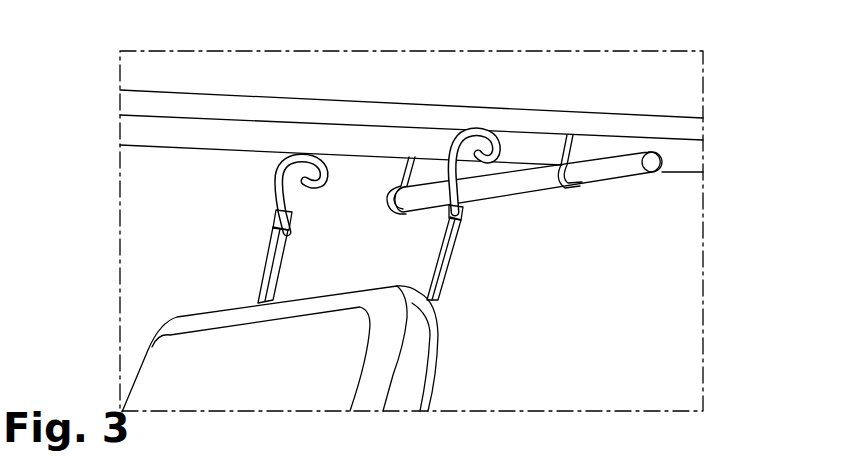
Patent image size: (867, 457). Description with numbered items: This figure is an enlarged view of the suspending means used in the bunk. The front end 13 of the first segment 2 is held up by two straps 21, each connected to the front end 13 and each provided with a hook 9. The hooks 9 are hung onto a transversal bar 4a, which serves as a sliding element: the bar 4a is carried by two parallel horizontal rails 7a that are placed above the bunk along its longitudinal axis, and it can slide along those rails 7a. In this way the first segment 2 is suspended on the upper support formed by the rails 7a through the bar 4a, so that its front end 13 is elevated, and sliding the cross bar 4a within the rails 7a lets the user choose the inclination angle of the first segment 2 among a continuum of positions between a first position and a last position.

The first segment 2 is at (358, 425).
The transversal bar 4a is at (607, 188).
The rail 7a is at (712, 127).
The hook 9 is at (335, 170).
The front end 13 is at (307, 308).
The strap 21 is at (430, 258).